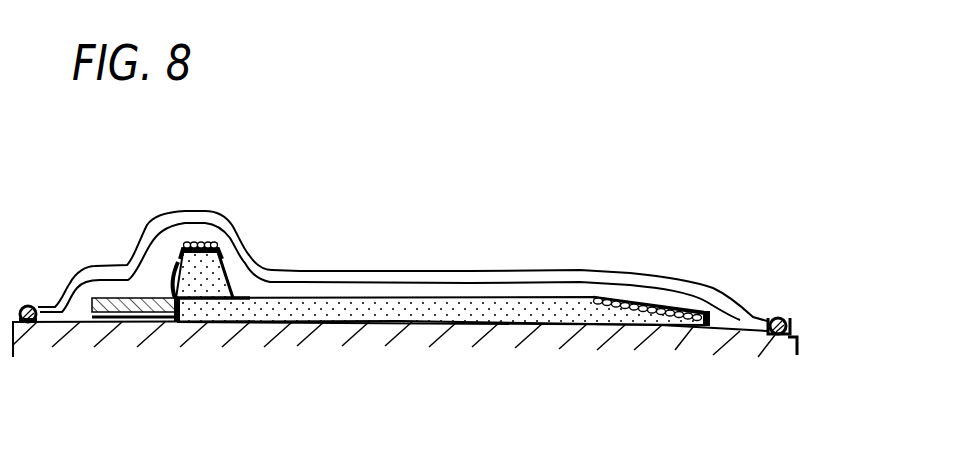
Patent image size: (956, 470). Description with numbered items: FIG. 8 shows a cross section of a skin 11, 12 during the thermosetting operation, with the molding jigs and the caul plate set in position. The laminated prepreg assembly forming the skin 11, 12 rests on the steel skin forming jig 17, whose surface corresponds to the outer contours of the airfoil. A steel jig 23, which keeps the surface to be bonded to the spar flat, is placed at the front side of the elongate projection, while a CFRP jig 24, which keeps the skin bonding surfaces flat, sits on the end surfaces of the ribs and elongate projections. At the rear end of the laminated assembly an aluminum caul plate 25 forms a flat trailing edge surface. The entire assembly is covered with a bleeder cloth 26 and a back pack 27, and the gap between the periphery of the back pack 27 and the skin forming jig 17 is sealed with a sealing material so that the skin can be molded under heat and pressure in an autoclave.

The skin 11 is at (443, 363).
The skin 12 is at (515, 318).
The skin forming jig 17 is at (380, 335).
The jig 23 is at (122, 318).
The jig 24 is at (206, 243).
The caul plate 25 is at (682, 302).
The bleeder cloth 26 is at (408, 282).
The back pack 27 is at (553, 270).